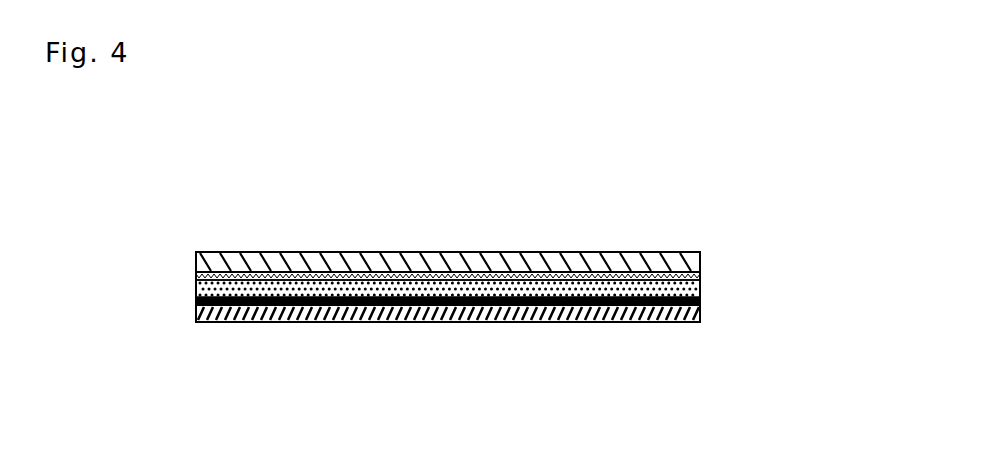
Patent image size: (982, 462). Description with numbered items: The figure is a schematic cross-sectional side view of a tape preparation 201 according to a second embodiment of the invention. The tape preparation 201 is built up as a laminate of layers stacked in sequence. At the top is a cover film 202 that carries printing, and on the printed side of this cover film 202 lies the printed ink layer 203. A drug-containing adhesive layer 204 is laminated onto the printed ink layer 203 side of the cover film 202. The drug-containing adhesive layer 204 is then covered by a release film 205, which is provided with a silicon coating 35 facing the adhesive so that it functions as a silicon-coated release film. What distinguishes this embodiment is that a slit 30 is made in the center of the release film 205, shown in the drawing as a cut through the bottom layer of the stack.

The tape preparation 201 is at (533, 218).
The cover film 202 is at (684, 260).
The printed ink layer 203 is at (197, 275).
The drug-containing adhesive layer 204 is at (683, 288).
The silicon coating 35 is at (197, 302).
The release film 205 is at (683, 317).
The slit 30 is at (450, 308).